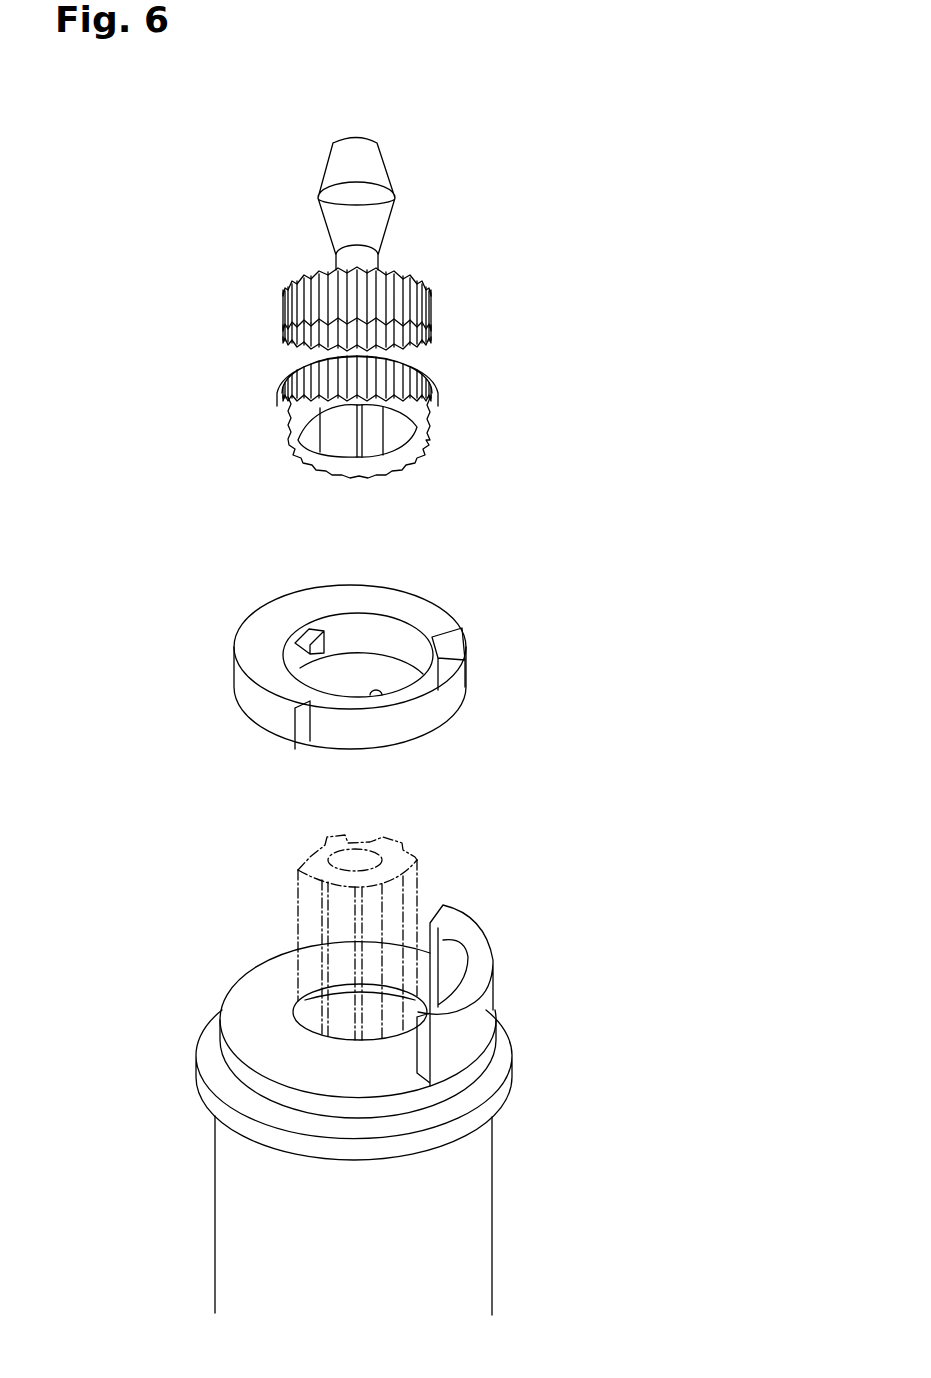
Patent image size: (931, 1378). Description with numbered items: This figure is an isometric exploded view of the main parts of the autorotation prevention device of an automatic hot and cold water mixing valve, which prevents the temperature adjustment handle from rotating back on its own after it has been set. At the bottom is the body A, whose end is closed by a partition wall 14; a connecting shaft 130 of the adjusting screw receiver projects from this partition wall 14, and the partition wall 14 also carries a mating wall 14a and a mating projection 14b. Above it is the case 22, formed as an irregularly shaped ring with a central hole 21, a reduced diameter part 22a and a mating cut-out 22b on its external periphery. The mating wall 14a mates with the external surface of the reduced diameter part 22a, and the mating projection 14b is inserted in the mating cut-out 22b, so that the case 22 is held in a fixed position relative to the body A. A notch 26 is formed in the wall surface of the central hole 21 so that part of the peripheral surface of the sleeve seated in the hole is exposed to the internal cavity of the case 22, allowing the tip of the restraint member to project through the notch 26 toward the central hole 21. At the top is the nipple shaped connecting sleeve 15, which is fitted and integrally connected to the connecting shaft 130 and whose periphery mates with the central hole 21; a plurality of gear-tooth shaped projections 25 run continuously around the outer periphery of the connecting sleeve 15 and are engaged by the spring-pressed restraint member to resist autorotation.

The nipple shaped connecting sleeve 15 is at (437, 356).
The projections 25 is at (430, 416).
The case 22 is at (392, 588).
The reduced diameter part 22a is at (433, 702).
The mating cut-out 22b is at (447, 647).
The notch 26 is at (310, 633).
The central hole 21 is at (382, 693).
The connecting shaft 130 is at (307, 863).
The mating projection 14b is at (447, 925).
The mating wall 14a is at (463, 1030).
The partition wall 14 is at (483, 1085).
The body A is at (493, 1257).